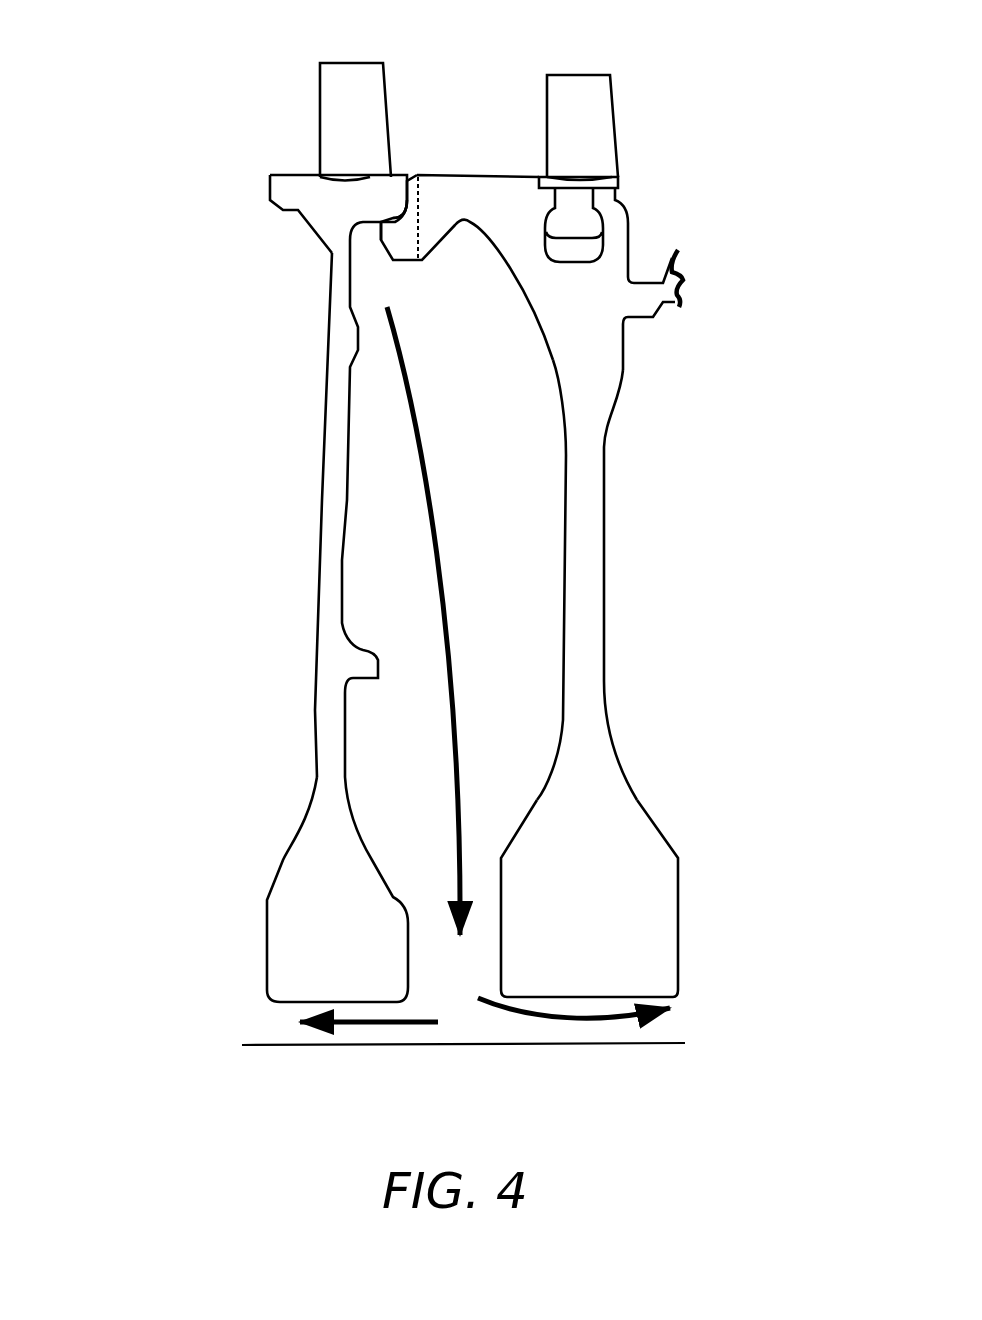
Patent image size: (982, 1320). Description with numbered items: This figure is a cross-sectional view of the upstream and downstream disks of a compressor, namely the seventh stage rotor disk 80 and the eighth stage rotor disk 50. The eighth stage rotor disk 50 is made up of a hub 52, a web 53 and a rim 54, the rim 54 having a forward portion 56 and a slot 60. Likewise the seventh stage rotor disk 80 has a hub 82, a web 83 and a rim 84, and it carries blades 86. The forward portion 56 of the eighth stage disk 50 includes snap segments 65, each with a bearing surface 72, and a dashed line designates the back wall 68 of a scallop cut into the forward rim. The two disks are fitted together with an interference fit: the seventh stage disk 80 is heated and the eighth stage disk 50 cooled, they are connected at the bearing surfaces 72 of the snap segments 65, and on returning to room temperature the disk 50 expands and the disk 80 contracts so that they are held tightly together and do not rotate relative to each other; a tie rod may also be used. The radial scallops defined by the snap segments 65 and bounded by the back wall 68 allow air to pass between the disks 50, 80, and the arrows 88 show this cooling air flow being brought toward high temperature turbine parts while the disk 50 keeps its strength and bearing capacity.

The eighth stage rotor disk 50 is at (600, 513).
The hub 52 is at (688, 900).
The web 53 is at (618, 654).
The rim 54 is at (698, 285).
The forward portion 56 is at (448, 135).
The slot 60 is at (586, 266).
The snap segments 65 is at (372, 248).
The back wall 68 is at (420, 217).
The bearing surface 72 is at (402, 212).
The seventh stage rotor disk 80 is at (230, 588).
The hub 82 is at (255, 932).
The web 83 is at (292, 602).
The rim 84 is at (292, 242).
The blades 86 is at (353, 113).
The cooling air flow 88 is at (398, 334).